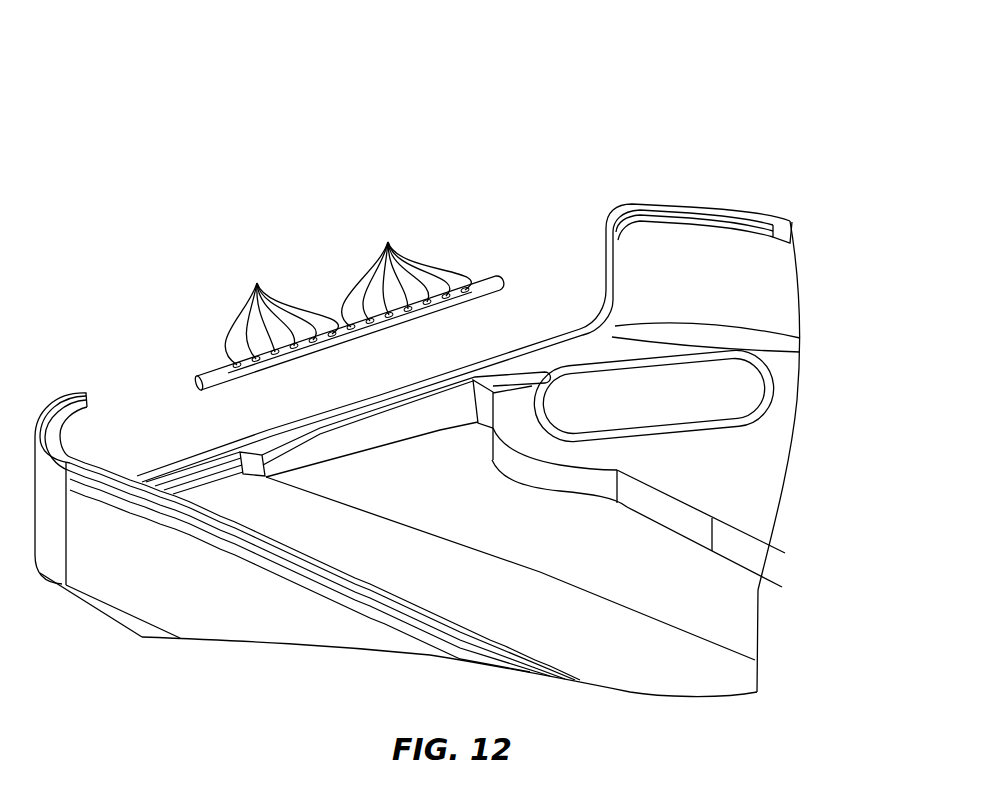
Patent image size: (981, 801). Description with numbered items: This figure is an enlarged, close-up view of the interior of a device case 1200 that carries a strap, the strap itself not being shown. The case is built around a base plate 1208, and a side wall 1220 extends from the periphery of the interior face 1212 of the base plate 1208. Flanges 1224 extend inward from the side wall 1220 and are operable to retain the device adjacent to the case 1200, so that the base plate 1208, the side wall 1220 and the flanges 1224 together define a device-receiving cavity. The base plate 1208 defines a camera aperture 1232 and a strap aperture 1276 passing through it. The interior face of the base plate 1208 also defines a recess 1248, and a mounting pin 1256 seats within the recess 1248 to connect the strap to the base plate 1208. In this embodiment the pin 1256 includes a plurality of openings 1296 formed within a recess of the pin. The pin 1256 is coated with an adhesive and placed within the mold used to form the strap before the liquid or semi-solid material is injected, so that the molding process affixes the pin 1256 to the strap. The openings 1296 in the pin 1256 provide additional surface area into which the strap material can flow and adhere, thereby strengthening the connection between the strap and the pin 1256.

The device case 1200 is at (672, 100).
The flanges 1224 is at (56, 402).
The side wall 1220 is at (205, 597).
The base plate 1208 is at (272, 515).
The interior face 1212 is at (410, 561).
The recess 1248 is at (475, 410).
The camera aperture 1232 is at (565, 413).
The strap aperture 1276 is at (680, 540).
The mounting pin 1256 is at (490, 277).
The openings 1296 is at (348, 289).